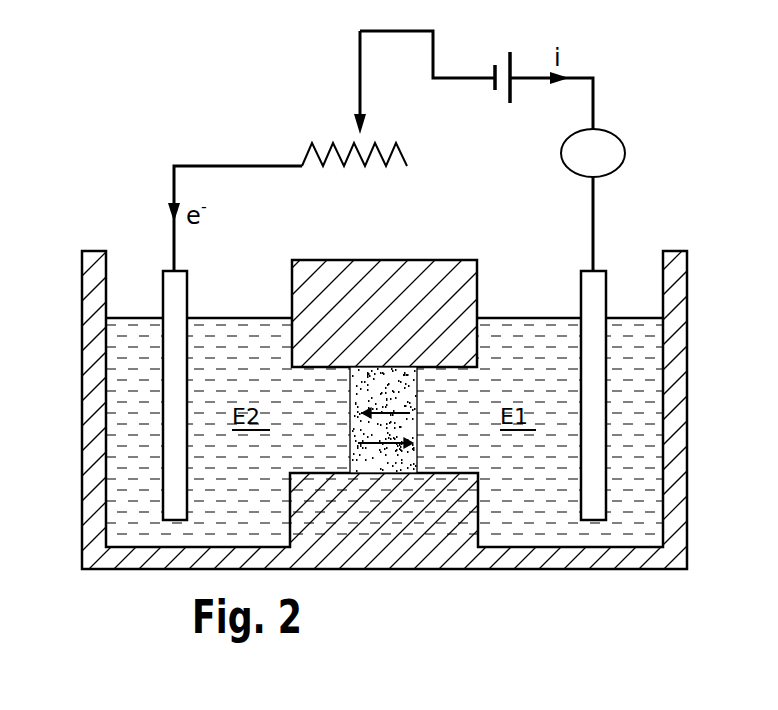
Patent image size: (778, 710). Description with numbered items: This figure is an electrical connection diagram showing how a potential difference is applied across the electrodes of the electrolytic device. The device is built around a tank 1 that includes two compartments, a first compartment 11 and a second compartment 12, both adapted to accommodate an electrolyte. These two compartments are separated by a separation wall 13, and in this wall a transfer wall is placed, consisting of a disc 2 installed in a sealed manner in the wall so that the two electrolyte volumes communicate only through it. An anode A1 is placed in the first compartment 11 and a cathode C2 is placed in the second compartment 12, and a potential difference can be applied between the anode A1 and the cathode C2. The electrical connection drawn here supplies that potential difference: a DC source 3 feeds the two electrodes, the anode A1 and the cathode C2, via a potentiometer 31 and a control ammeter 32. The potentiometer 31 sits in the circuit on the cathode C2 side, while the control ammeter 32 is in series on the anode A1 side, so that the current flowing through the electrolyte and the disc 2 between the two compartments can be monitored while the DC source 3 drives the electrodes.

The tank 1 is at (680, 283).
The disc 2 is at (398, 427).
The DC source 3 is at (503, 62).
The first compartment 11 is at (652, 485).
The second compartment 12 is at (115, 483).
The separation wall 13 is at (438, 267).
The potentiometer 31 is at (325, 138).
The control ammeter 32 is at (623, 143).
The cathode C2 is at (170, 347).
The anode A1 is at (592, 358).